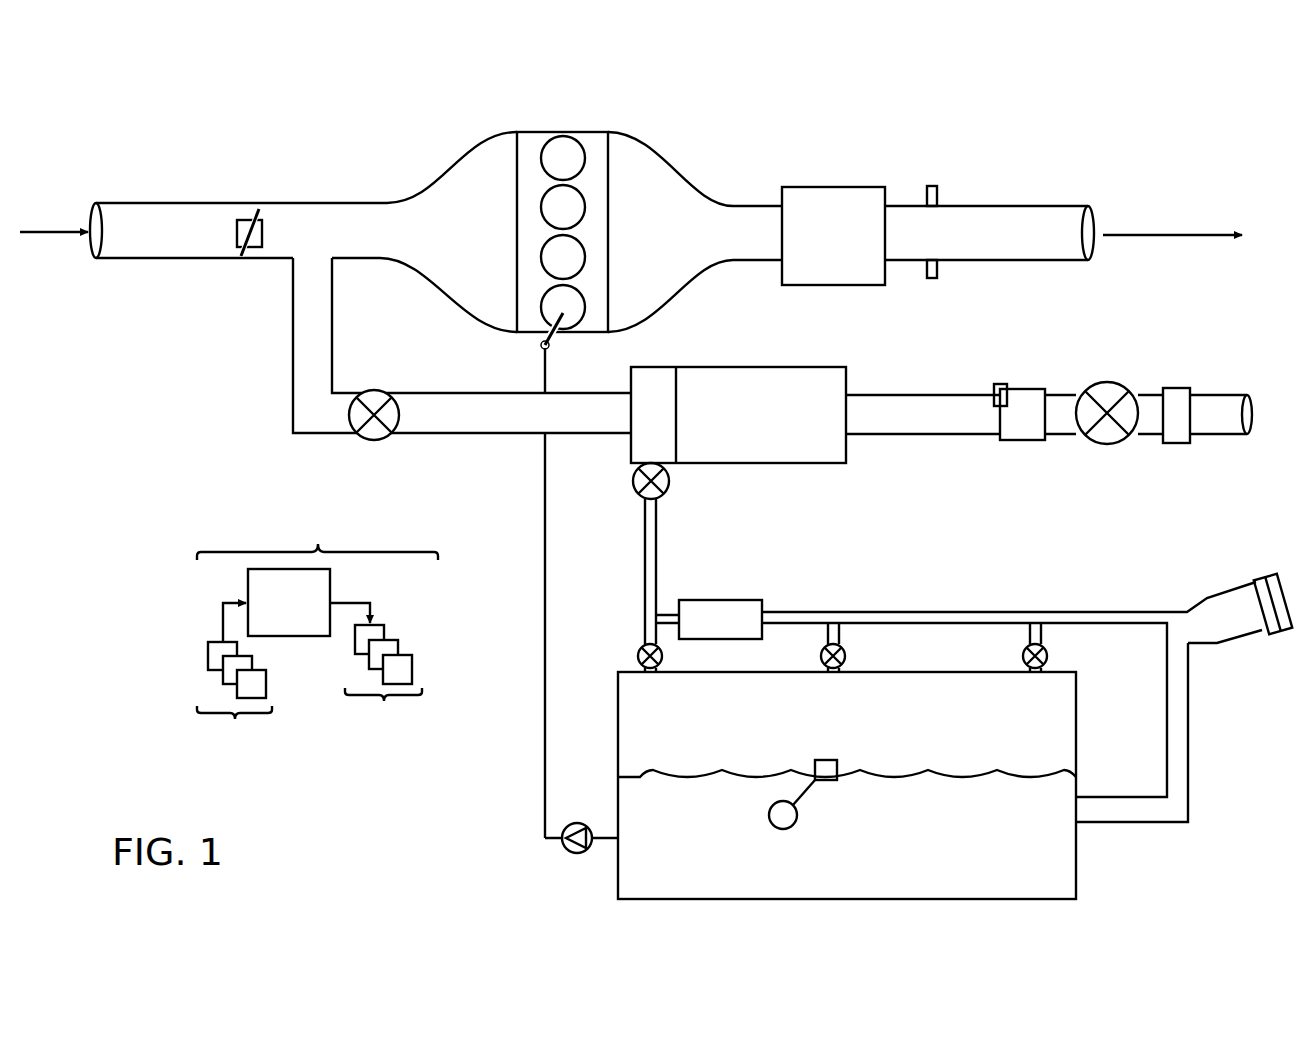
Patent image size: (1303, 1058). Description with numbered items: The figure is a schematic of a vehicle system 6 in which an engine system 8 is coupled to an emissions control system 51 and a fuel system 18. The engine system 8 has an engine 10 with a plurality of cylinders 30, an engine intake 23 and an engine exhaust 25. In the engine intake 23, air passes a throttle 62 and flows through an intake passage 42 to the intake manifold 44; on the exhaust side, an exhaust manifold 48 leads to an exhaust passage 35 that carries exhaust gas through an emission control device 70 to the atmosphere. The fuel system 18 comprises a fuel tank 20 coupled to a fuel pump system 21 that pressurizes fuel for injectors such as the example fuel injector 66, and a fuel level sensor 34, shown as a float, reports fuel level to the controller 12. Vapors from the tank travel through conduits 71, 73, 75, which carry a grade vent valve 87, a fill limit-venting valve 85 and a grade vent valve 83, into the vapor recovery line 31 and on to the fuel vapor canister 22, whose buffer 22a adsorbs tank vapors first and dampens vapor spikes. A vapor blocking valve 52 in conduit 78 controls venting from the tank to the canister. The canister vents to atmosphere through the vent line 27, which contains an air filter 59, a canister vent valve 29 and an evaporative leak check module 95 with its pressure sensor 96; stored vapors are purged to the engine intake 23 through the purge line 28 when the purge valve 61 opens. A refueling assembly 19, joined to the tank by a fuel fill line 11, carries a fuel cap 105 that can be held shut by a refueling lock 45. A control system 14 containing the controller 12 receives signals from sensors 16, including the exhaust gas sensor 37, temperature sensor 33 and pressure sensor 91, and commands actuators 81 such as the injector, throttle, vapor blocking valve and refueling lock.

The vehicle system 6 is at (104, 134).
The engine system 8 is at (894, 134).
The engine 10 is at (608, 216).
The fuel fill line 11 is at (1190, 720).
The controller 12 is at (296, 605).
The control system 14 is at (317, 531).
The sensors 16 is at (234, 700).
The fuel system 18 is at (1122, 857).
The refueling assembly 19 is at (1243, 575).
The fuel tank 20 is at (1077, 773).
The fuel pump system 21 is at (583, 827).
The fuel vapor canister 22 is at (846, 381).
The buffer 22a is at (648, 367).
The engine intake 23 is at (448, 161).
The engine exhaust 25 is at (772, 144).
The vent line 27 is at (888, 426).
The purge line 28 is at (486, 426).
The canister vent valve 29 is at (1100, 382).
The cylinders 30 is at (583, 150).
The vapor recovery line 31 is at (1093, 612).
The temperature sensor 33 is at (927, 270).
The fuel level sensor 34 is at (830, 762).
The exhaust passage 35 is at (1044, 206).
The exhaust gas sensor 37 is at (927, 196).
The intake passage 42 is at (292, 260).
The intake manifold 44 is at (478, 245).
The refueling lock 45 is at (1275, 634).
The exhaust manifold 48 is at (689, 245).
The emissions control system 51 is at (1232, 353).
The vapor blocking valve 52 is at (639, 494).
The air filter 59 is at (1177, 388).
The purge valve 61 is at (372, 391).
The throttle 62 is at (262, 236).
The fuel injector 66 is at (550, 341).
The emission control device 70 is at (820, 188).
The conduit 71 is at (658, 641).
The conduit 73 is at (828, 641).
The conduit 75 is at (1030, 641).
The conduit 78 is at (656, 528).
The actuators 81 is at (384, 683).
The grade vent valve 83 is at (1047, 657).
The fill limit-venting valve 85 is at (845, 657).
The grade vent valve 87 is at (637, 656).
The pressure sensor 91 is at (762, 614).
The evaporative leak check module 95 is at (1023, 389).
The pressure sensor 96 is at (1000, 384).
The fuel cap 105 is at (1272, 573).